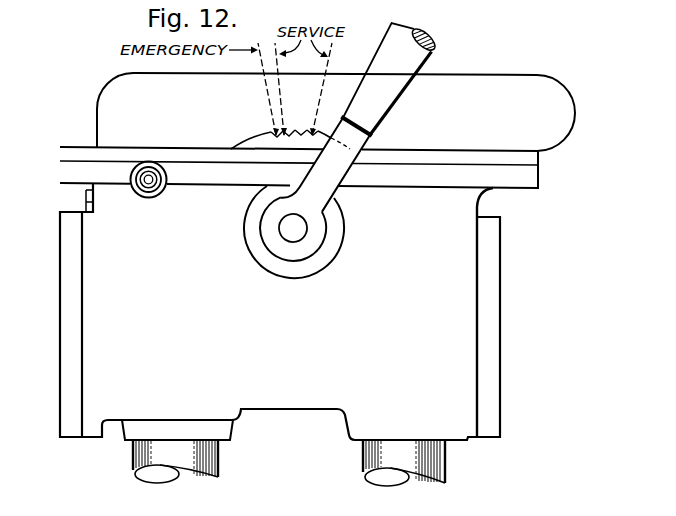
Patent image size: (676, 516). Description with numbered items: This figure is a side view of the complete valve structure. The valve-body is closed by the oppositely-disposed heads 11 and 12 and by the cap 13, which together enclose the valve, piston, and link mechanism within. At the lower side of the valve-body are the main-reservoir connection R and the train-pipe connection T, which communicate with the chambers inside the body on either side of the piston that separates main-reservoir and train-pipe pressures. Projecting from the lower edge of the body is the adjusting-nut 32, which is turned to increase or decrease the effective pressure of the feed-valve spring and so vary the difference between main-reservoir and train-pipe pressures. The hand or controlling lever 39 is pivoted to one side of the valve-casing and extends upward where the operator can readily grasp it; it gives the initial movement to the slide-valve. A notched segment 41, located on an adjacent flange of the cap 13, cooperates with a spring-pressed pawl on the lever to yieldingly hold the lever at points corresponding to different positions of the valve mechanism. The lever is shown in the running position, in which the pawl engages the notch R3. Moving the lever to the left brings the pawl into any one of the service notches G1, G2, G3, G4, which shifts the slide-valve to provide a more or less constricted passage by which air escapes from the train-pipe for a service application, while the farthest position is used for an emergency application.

The head 11 is at (59, 340).
The head 12 is at (501, 287).
The cap 13 is at (508, 75).
The adjusting-nut 32 is at (148, 187).
The hand or controlling lever 39 is at (378, 159).
The notched segment 41 is at (283, 125).
The service notch G1 is at (313, 133).
The service notch G2 is at (298, 132).
The service notch G3 is at (286, 130).
The service notch G4 is at (281, 140).
The running-position notch R3 is at (362, 189).
The train-pipe connection T is at (150, 457).
The main-reservoir connection R is at (447, 467).